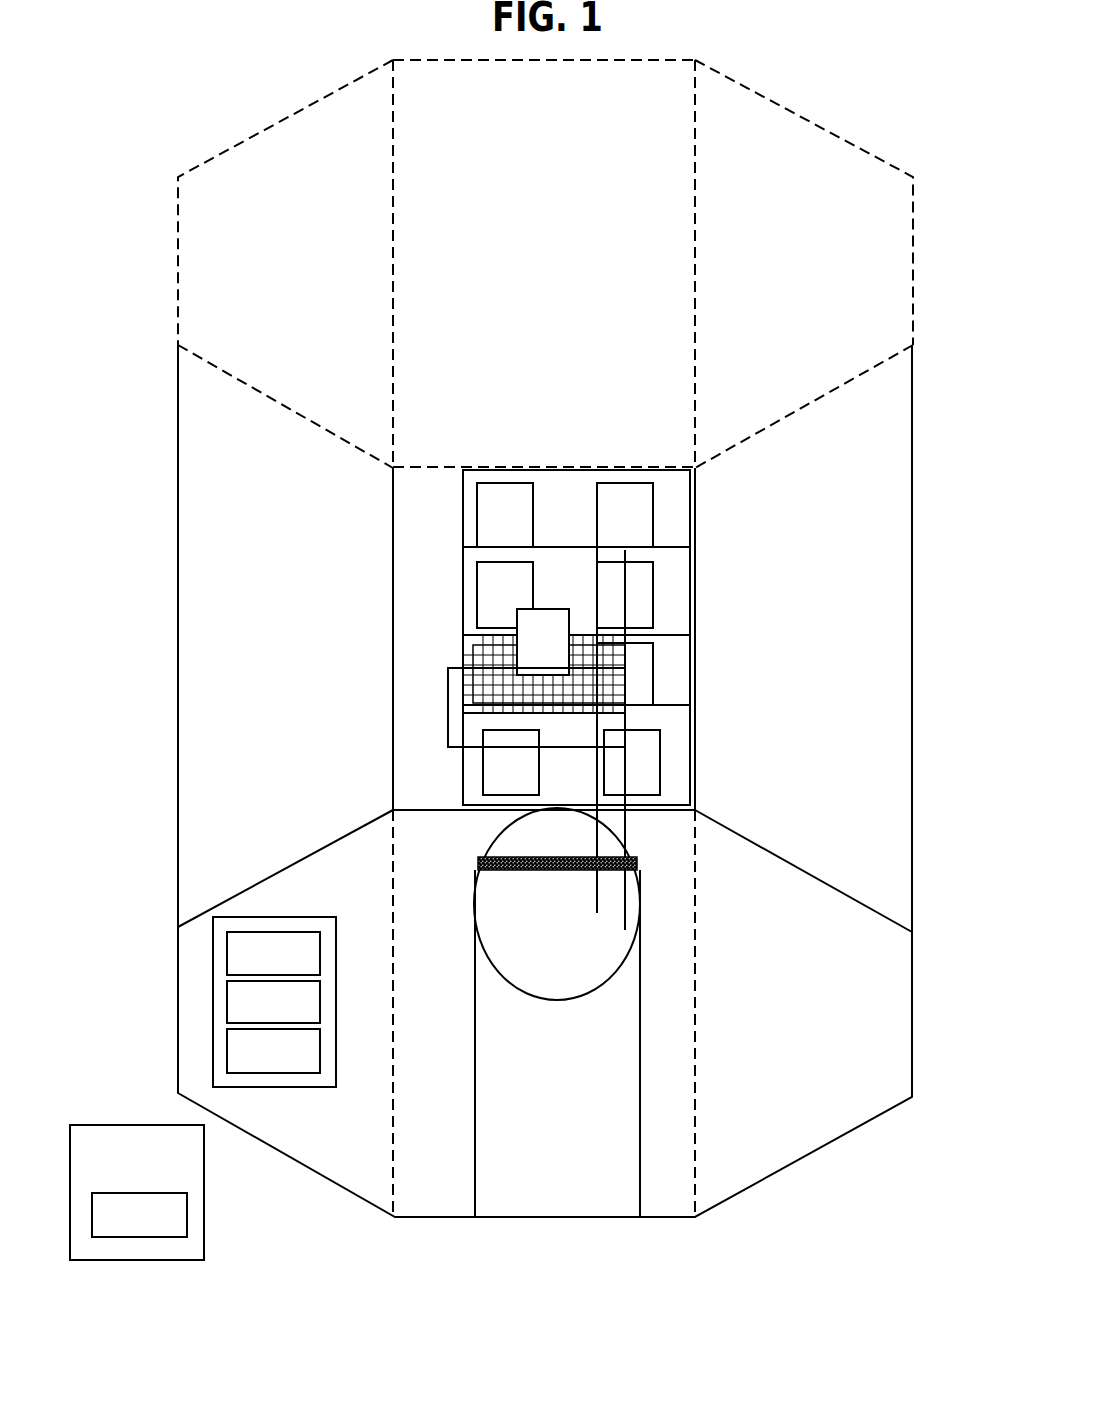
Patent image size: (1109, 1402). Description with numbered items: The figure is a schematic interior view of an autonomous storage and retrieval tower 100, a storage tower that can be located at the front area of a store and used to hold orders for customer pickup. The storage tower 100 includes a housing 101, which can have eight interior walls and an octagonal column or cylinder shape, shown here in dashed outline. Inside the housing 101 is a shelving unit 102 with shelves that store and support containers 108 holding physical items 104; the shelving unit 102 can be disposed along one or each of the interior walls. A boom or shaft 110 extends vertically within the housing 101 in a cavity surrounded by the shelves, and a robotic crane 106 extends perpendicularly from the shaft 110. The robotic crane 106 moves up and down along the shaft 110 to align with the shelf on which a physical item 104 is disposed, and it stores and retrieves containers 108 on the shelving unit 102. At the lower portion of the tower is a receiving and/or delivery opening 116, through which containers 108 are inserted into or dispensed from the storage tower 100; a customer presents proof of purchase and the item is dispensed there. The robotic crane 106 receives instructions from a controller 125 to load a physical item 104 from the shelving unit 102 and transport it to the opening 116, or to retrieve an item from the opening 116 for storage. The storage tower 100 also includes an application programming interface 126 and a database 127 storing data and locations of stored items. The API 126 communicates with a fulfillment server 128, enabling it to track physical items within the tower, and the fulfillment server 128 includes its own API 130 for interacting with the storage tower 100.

The autonomous storage and retrieval tower 100 is at (805, 1210).
The housing 101 is at (260, 180).
The shelving unit 102 is at (462, 500).
The physical items 104 is at (477, 592).
The robotic crane 106 is at (448, 713).
The containers 108 is at (463, 685).
The boom or shaft 110 is at (597, 815).
The receiving and/or delivery opening 116 is at (625, 996).
The controller 125 is at (273, 953).
The application programming interface 126 is at (273, 1002).
The database 127 is at (273, 1051).
The fulfillment server 128 is at (213, 1016).
The API 130 is at (139, 1215).